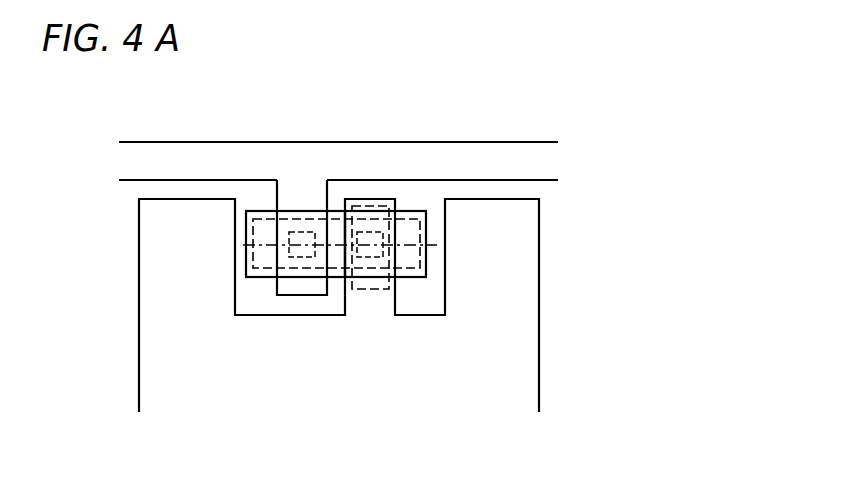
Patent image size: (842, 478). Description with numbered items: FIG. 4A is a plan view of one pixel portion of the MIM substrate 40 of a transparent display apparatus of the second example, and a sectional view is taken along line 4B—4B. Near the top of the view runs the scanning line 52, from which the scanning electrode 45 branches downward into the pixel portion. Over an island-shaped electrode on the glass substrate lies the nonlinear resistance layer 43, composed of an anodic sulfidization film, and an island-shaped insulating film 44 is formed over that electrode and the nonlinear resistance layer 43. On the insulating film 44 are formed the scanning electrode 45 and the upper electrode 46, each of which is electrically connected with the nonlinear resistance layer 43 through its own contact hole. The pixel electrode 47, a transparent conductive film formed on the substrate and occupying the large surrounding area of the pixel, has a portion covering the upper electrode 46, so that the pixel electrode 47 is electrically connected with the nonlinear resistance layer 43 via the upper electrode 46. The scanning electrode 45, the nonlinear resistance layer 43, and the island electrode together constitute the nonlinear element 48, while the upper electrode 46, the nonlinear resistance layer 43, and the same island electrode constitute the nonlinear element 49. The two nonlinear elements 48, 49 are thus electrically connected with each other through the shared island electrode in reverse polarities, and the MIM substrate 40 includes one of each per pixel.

The MIM substrate 40 is at (559, 117).
The scanning line 52 is at (497, 158).
The pixel electrode 47 is at (520, 372).
The scanning electrode 45 is at (300, 187).
The insulating film 44 is at (418, 210).
The nonlinear resistance layer 43 is at (267, 220).
The upper electrode 46 is at (374, 204).
The line 4B— 4B is at (483, 245).
The nonlinear element 48 is at (286, 338).
The nonlinear element 49 is at (372, 339).